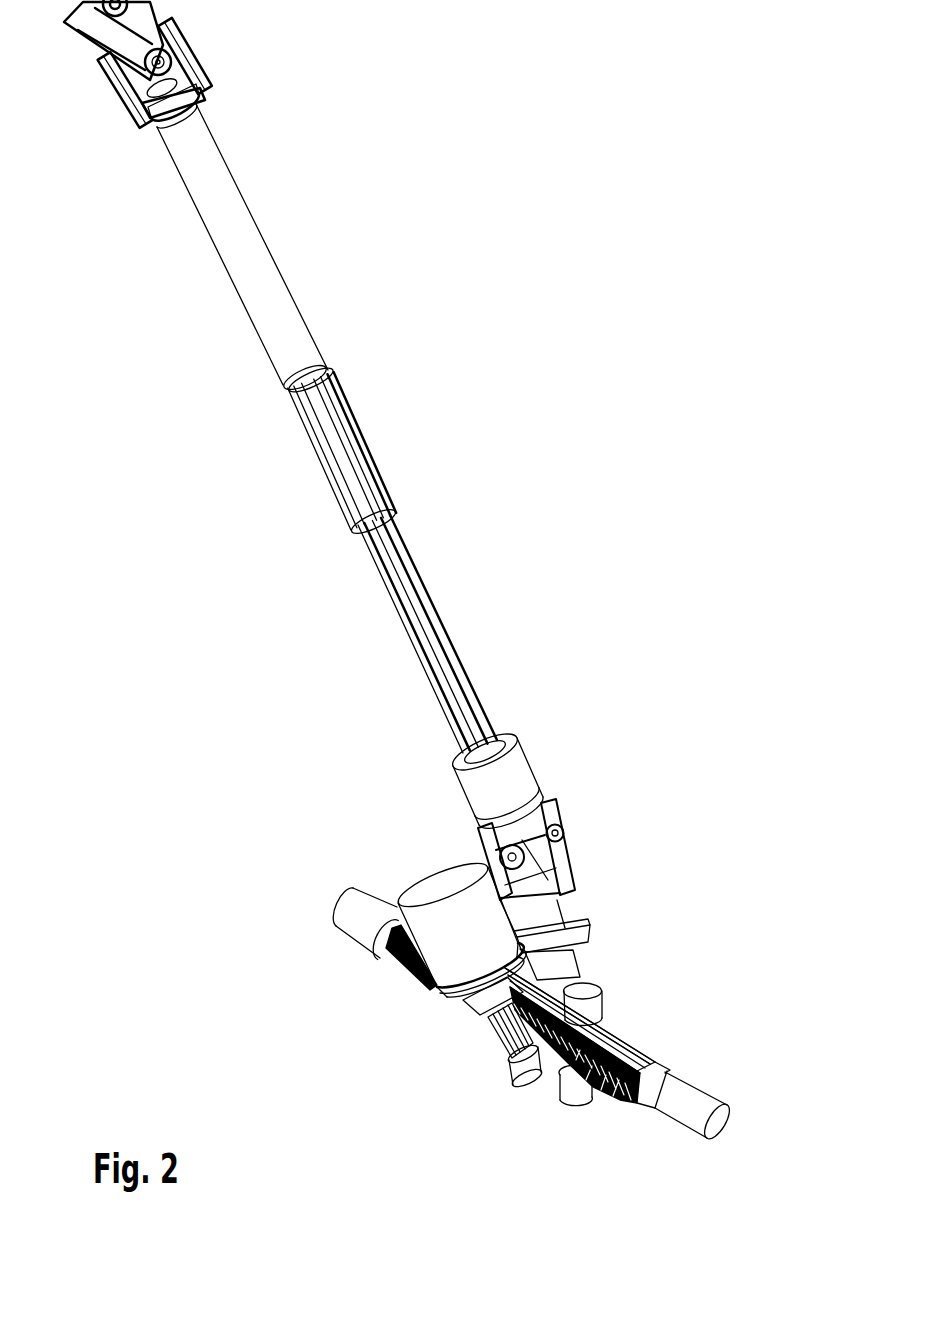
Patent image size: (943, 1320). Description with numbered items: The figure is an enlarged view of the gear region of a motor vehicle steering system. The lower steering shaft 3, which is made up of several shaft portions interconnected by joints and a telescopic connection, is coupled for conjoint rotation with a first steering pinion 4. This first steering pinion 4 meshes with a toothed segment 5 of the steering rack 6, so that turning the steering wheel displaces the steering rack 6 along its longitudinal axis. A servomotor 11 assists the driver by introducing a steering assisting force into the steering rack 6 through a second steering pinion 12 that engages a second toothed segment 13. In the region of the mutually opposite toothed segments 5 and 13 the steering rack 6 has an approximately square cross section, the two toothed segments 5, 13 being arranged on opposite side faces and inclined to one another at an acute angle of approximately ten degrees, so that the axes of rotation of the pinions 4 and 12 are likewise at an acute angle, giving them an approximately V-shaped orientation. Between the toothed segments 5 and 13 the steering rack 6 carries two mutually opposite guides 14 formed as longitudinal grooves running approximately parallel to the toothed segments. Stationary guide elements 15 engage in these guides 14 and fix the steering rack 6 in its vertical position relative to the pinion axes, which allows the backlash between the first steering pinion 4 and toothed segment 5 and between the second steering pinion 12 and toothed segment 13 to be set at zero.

The lower steering shaft 3 is at (270, 293).
The first steering pinion 4 is at (558, 965).
The toothed segment 5 is at (638, 1068).
The steering rack 6 is at (667, 1072).
The servomotor 11 is at (450, 937).
The second steering pinion 12 is at (492, 1040).
The second toothed segment 13 is at (610, 1093).
The guides 14 is at (620, 1035).
The guide elements 15 is at (583, 1087).